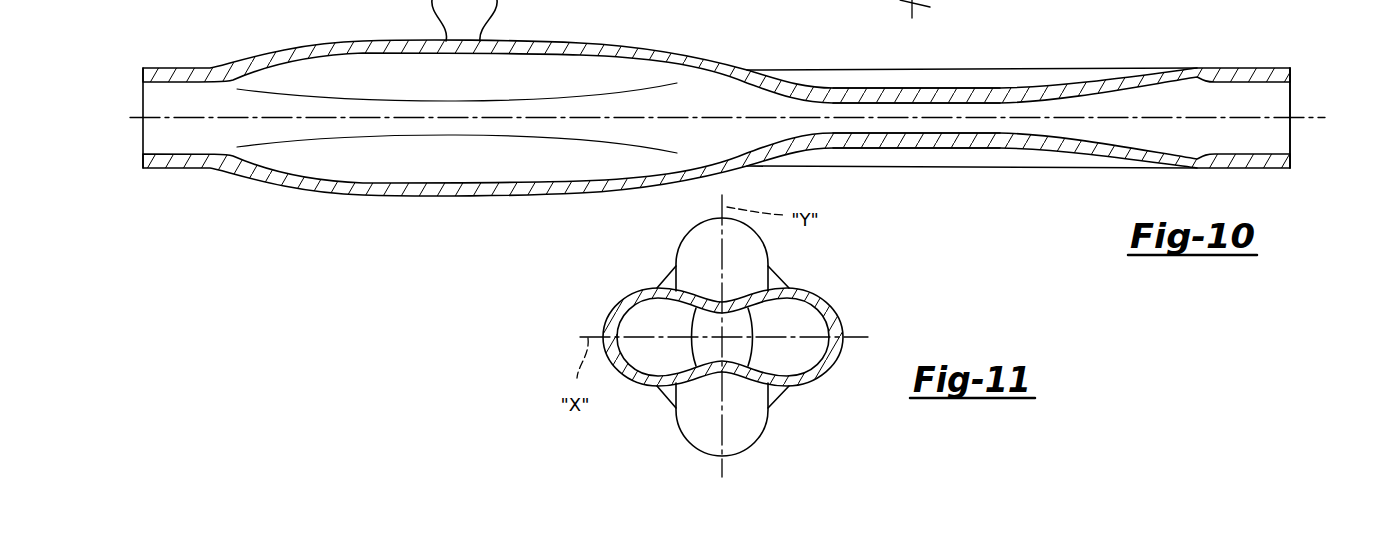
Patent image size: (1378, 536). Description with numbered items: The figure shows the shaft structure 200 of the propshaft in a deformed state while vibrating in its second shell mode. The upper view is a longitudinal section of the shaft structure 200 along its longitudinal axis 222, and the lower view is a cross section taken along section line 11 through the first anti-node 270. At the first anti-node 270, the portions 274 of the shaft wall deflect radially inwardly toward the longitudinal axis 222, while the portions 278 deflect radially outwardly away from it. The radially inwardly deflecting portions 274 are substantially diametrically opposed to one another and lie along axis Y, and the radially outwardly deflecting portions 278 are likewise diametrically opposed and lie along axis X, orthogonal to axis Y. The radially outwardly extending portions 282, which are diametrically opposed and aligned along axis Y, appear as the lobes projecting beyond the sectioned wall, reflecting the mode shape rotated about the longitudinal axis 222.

In FIG. 10, the shaft structure 200 is at (353, 30).
In FIG. 11, the shaft structure 200 is at (723, 337).
In FIG. 10, the longitudinal axis 222 is at (1308, 120).
In FIG. 10, the first anti-node 270 is at (1033, 70).
In FIG. 10, the radially inwardly deflecting portions 274 is at (1005, 87).
In FIG. 11, the radially inwardly deflecting portions 274 is at (722, 300).
In FIG. 11, the radially outwardly deflecting portions 278 is at (604, 334).
In FIG. 11, the radially outwardly extending portions 282 is at (722, 218).
In FIG. 10, the section line 11- 11 is at (701, 20).